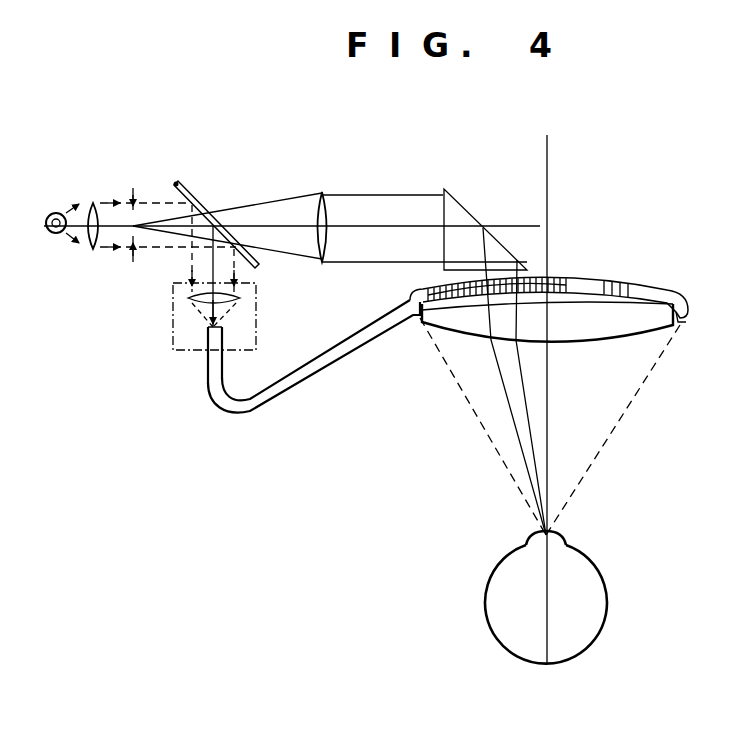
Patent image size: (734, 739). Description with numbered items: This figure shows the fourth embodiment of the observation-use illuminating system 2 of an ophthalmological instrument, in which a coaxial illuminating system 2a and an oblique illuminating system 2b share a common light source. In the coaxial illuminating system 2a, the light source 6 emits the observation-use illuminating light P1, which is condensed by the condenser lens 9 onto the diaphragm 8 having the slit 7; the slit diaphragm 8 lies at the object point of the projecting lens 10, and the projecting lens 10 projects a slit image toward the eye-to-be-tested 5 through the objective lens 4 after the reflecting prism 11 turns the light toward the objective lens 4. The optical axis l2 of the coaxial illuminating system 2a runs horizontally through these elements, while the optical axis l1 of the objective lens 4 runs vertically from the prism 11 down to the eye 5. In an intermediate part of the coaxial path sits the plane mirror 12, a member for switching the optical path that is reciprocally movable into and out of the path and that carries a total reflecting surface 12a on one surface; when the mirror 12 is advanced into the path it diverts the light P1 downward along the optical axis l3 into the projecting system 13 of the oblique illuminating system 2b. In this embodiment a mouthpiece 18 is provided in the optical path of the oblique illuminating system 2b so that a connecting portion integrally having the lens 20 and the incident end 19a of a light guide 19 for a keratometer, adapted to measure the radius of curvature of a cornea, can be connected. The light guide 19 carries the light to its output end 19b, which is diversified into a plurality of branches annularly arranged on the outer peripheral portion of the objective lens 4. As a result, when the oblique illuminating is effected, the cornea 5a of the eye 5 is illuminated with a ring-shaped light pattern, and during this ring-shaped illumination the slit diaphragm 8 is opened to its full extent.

The observation-use illuminating system 2 is at (389, 168).
The coaxial illuminating system 2a is at (301, 136).
The oblique illuminating system 2b is at (286, 412).
The objective lens 4 is at (618, 312).
The eye-to-be-tested 5 is at (598, 571).
The cornea 5a is at (565, 537).
The light source 6 is at (60, 212).
The slit 7 is at (132, 251).
The diaphragm 8 is at (132, 193).
The condenser lens 9 is at (92, 249).
The projecting lens 10 is at (331, 210).
The reflecting prism 11 is at (473, 208).
The plane mirror 12 is at (190, 193).
The total reflecting surface 12a is at (176, 183).
The projecting system 13 is at (270, 274).
The mouthpiece 18 is at (173, 326).
The light guide 19 is at (347, 362).
The incident end 19a is at (224, 321).
The output end 19b is at (408, 323).
The lens 20 is at (207, 310).
The observation-use illuminating light P1 is at (528, 381).
The optical axis of the objective lens l1 is at (549, 219).
The optical axis of the coaxial illuminating system l2 is at (406, 232).
The optical axis of the oblique illuminating system l3 is at (193, 257).